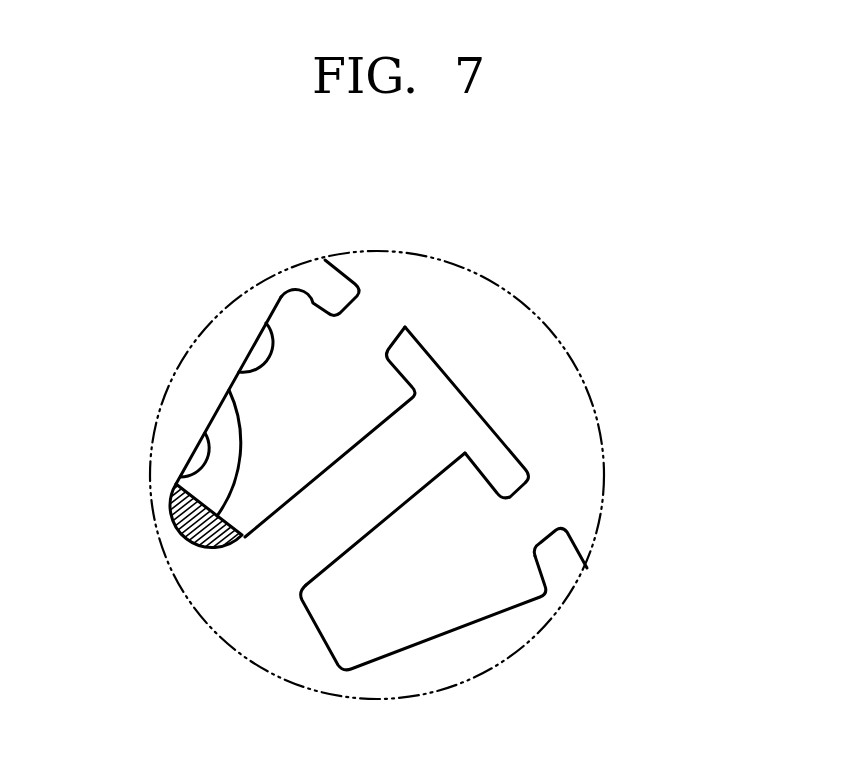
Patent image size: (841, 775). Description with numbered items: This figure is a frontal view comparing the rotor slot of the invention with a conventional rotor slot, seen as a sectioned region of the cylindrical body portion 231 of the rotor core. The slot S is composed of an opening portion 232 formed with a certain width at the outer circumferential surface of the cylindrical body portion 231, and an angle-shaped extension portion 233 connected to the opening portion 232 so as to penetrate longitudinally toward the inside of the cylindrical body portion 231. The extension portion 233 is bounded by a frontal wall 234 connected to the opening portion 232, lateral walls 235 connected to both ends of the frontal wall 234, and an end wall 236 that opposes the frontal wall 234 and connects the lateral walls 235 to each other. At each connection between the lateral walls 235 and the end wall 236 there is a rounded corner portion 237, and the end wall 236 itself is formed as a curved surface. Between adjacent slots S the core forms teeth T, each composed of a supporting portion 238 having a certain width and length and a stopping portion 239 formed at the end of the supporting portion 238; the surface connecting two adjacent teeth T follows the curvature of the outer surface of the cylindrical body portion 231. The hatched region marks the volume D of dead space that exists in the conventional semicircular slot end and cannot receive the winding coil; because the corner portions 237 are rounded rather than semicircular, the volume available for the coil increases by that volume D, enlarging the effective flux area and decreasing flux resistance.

The cylindrical body portion 231 is at (222, 610).
The opening portion 232 is at (539, 506).
The extension portion 233 is at (447, 579).
The frontal wall 234 is at (283, 294).
The lateral wall 235 is at (266, 323).
The end wall 236 is at (229, 390).
The rounded corner portion 237 is at (205, 433).
The supporting portion 238 is at (397, 494).
The stopping portion 239 is at (455, 403).
The volume of dead space D is at (170, 529).
The teeth T is at (692, 360).
The slot S is at (703, 433).